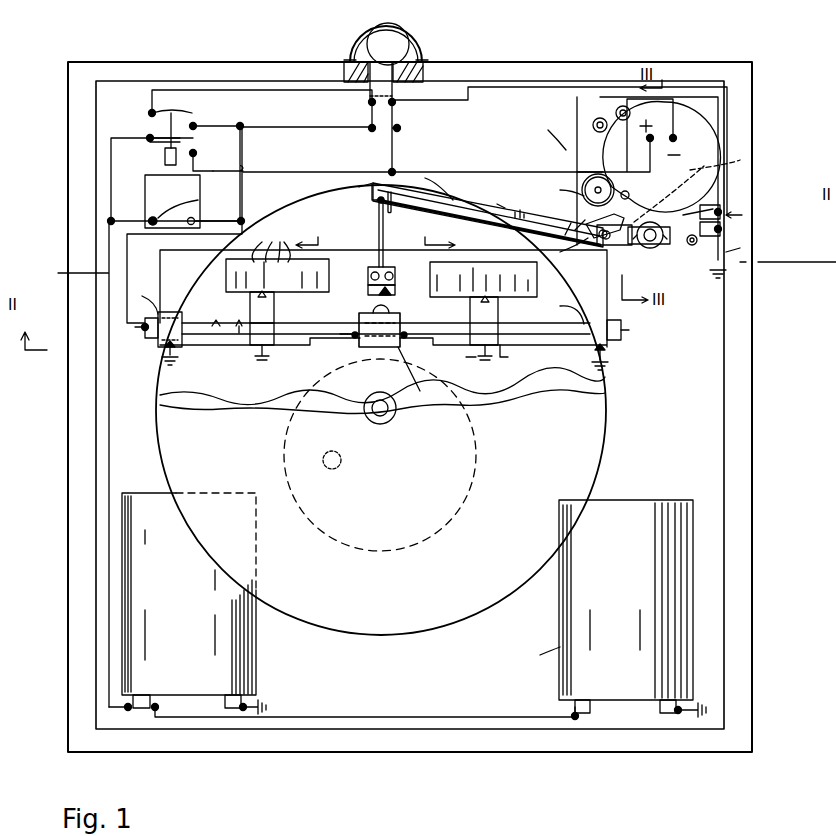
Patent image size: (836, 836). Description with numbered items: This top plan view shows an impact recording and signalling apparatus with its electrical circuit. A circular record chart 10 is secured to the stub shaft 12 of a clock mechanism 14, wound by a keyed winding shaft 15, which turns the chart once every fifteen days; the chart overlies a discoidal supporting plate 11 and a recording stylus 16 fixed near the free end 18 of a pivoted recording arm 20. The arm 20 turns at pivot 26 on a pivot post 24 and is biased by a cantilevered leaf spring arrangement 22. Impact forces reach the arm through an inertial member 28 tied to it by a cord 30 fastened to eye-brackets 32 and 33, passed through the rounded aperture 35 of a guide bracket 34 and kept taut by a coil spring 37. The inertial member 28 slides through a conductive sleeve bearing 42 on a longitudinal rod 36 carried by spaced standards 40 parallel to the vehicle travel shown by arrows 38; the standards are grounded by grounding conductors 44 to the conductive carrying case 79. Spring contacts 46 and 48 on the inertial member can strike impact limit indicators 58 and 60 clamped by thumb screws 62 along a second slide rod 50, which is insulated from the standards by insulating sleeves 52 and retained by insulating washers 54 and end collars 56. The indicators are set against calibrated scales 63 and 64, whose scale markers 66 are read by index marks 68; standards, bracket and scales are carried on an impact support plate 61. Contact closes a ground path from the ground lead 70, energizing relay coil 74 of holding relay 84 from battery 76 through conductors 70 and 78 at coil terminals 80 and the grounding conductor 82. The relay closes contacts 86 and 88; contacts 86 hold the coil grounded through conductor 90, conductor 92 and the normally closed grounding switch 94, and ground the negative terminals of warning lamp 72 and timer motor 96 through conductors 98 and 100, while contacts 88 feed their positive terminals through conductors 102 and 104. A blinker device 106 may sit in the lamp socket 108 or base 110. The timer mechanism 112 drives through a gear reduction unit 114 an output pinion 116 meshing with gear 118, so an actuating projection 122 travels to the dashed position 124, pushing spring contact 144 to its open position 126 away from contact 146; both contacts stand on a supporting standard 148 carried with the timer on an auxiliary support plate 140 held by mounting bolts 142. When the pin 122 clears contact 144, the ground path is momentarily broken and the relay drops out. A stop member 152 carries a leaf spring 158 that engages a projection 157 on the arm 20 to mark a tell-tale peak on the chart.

The impact record disc 10 is at (608, 380).
The discoidal supporting plate 11 is at (610, 396).
The stub shaft 12 is at (392, 420).
The clock mechanism 14 is at (484, 432).
The keyed winding shaft 15 is at (340, 466).
The recording stylus 16 is at (393, 212).
The free end 18 is at (456, 196).
The recording arm 20 is at (462, 182).
The cantilevered leaf spring arrangement 22 is at (500, 198).
The pivot post 24 is at (582, 218).
The pivot 26 is at (562, 212).
The inertial member 28 is at (372, 347).
The cord 30 is at (378, 228).
The eye-bracket 32 is at (366, 312).
The eye-bracket 33 is at (366, 182).
The apertured guide bracket 34 is at (396, 276).
The aperture 35 is at (394, 299).
The longitudinal rod 36 is at (210, 330).
The coil spring 37 is at (374, 204).
The arrows 38 is at (375, 235).
The standards 40 is at (355, 304).
The sleeve bearing 42 is at (344, 316).
The grounding conductors 44 is at (176, 350).
The spring contact 46 is at (352, 342).
The spring contact 48 is at (420, 377).
The second slide rod 50 is at (230, 330).
The insulating sleeves 52 is at (172, 312).
The insulating washers 54 is at (158, 344).
The end collars 56 is at (143, 328).
The impact limit indicator 58 is at (250, 316).
The impact limit indicator 60 is at (515, 355).
The impact support plate 61 is at (158, 278).
The thumb screws 62 is at (270, 357).
The calibrated scale 63 is at (226, 266).
The calibrated scale 64 is at (476, 262).
The scale markers 66 is at (271, 245).
The index marks 68 is at (268, 298).
The ground lead 70 is at (72, 464).
The warning lamp 72 is at (402, 40).
The relay coil 74 is at (172, 201).
The battery 76 is at (256, 655).
The conductor 78 is at (35, 340).
The carrying case 79 is at (752, 450).
The relay coil terminals 80 is at (194, 214).
The grounding conductor 82 is at (262, 700).
The holding relay 84 is at (140, 147).
The relay contacts 86 is at (194, 123).
The relay contacts 88 is at (196, 152).
The conductor 90 is at (244, 155).
The conductor 92 is at (456, 84).
The grounding switch 94 is at (765, 216).
The timer motor 96 is at (712, 128).
The conductor 98 is at (302, 126).
The conductor 100 is at (446, 130).
The conductor 102 is at (286, 178).
The conductor 104 is at (452, 182).
The blinker device 106 is at (396, 104).
The socket 108 is at (370, 104).
The base 110 is at (365, 82).
The timer mechanism 112 is at (648, 178).
The gear reduction unit 114 is at (588, 177).
The output drive pinion 116 is at (558, 184).
The gear 118 is at (650, 248).
The actuating projection 122 is at (694, 246).
The dashed outlines 124 is at (670, 190).
The dashed outline 126 is at (710, 189).
The auxiliary support plate 140 is at (545, 133).
The mounting bolts 142 is at (604, 118).
The grounding switch spring contact 144 is at (726, 214).
The grounding switch spring contact 146 is at (726, 232).
The supporting standard 148 is at (726, 205).
The stop member 152 is at (612, 245).
The projection 157 is at (585, 262).
The leaf spring 158 is at (640, 244).